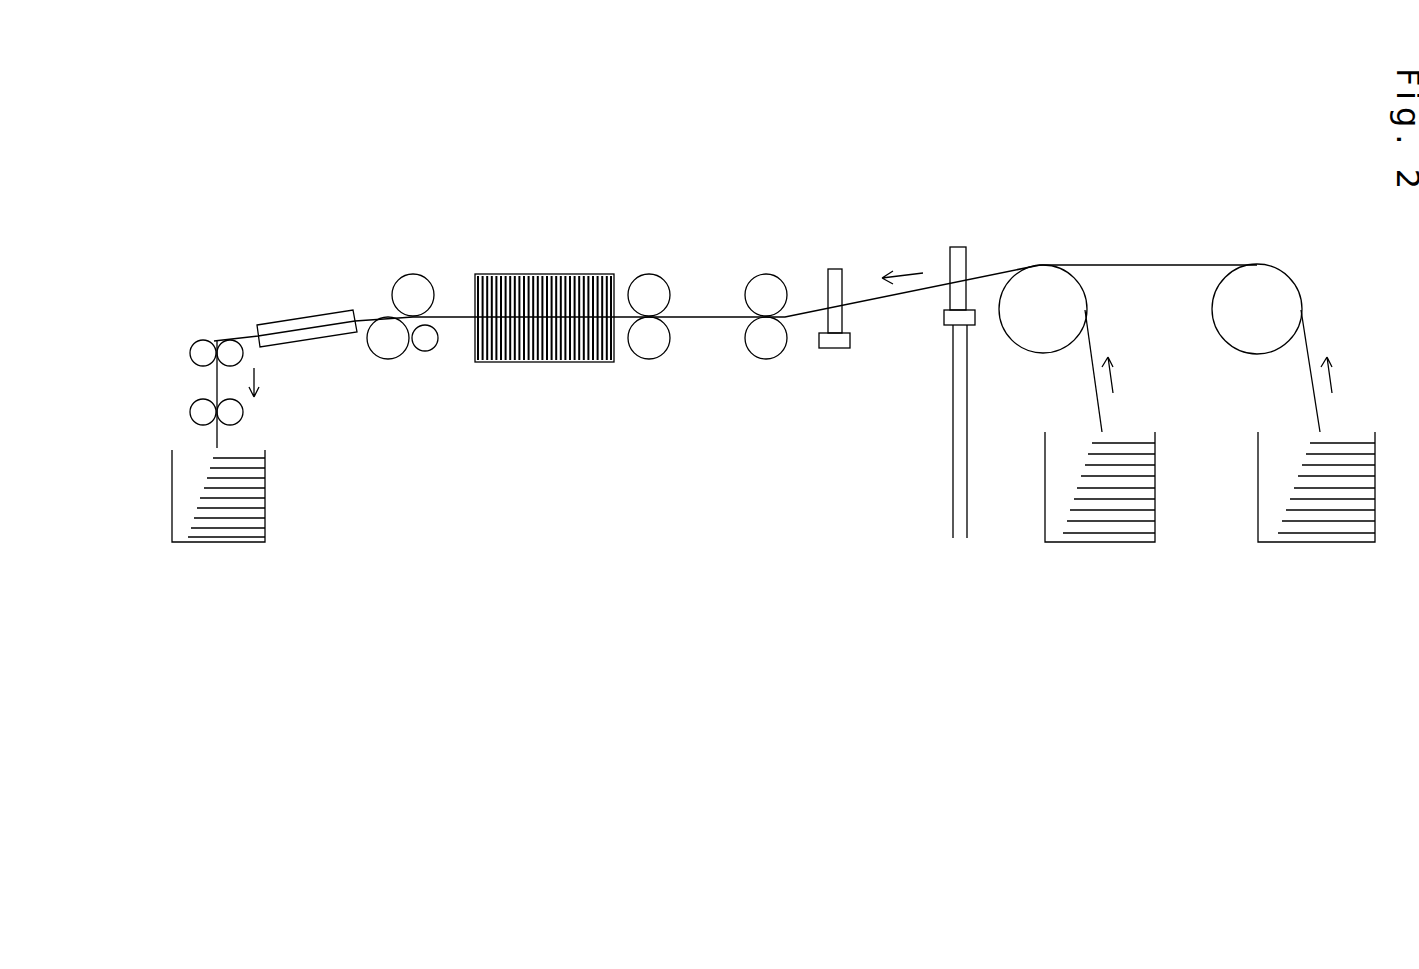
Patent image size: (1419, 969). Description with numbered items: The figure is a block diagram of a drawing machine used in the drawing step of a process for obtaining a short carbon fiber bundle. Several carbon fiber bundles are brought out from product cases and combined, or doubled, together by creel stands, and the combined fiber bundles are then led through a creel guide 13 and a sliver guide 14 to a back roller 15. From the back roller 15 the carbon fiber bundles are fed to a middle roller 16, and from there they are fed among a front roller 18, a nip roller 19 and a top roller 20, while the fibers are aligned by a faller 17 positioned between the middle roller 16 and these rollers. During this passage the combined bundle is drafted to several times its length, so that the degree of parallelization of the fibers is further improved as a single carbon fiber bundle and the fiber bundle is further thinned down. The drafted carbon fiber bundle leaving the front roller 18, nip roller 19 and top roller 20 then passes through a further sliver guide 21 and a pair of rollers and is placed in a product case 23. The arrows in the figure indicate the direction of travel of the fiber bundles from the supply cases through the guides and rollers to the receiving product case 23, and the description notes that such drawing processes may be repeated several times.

The creel guide 13 is at (957, 247).
The sliver guide 14 is at (832, 268).
The back roller 15 is at (766, 359).
The middle roller 16 is at (649, 359).
The faller 17 is at (540, 272).
The front roller 18 is at (413, 276).
The nip roller 19 is at (427, 352).
The top roller 20 is at (390, 359).
The sliver guide 21 is at (305, 312).
The product case 23 is at (218, 542).